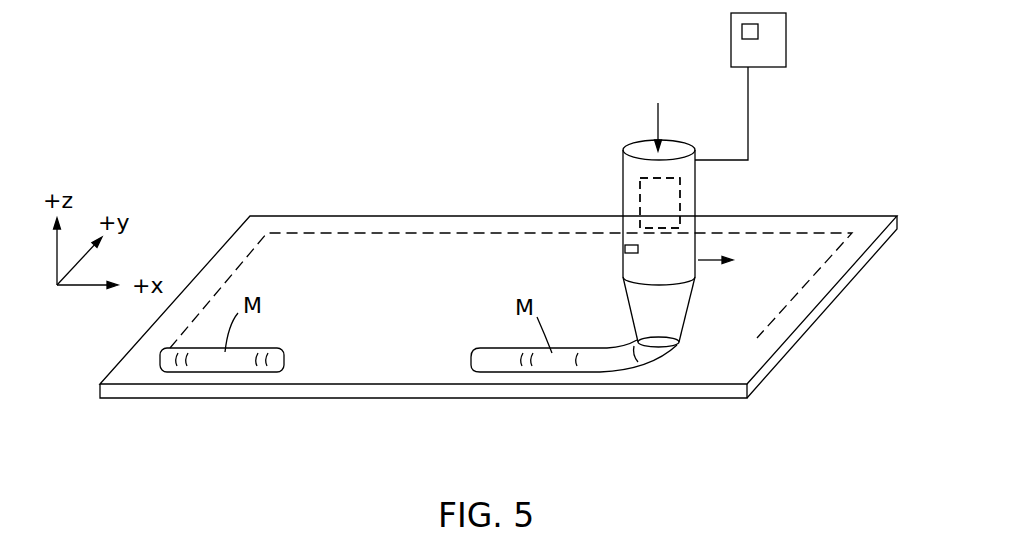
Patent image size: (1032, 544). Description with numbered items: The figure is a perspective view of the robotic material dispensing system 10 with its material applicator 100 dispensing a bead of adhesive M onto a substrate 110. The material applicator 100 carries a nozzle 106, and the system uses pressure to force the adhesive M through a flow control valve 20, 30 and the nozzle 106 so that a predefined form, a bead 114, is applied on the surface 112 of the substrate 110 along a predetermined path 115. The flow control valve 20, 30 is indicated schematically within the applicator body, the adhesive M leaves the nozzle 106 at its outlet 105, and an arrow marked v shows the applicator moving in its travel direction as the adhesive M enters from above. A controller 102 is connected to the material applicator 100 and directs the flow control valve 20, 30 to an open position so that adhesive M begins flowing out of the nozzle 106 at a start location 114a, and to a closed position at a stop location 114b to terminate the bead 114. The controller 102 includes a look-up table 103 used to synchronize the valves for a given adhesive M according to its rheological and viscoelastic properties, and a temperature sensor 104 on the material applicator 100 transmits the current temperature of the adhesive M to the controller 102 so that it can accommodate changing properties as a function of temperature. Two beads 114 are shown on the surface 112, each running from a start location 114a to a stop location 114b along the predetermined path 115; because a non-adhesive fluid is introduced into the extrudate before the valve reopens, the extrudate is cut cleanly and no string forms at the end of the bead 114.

The robotic material dispensing system 10 is at (848, 145).
The flow control valve 20 is at (687, 205).
The flow control valve 30 is at (660, 203).
The material applicator 100 is at (673, 253).
The controller 102 is at (786, 30).
The look-up table 103 is at (742, 30).
The temperature sensor 104 is at (625, 248).
The nozzle outlet 105 is at (657, 347).
The nozzle 106 is at (687, 312).
The substrate 110 is at (422, 212).
The surface 112 is at (283, 222).
The bead 114 is at (203, 380).
The start location 114a is at (163, 357).
The stop location 114b is at (285, 358).
The predetermined path 115 is at (596, 380).